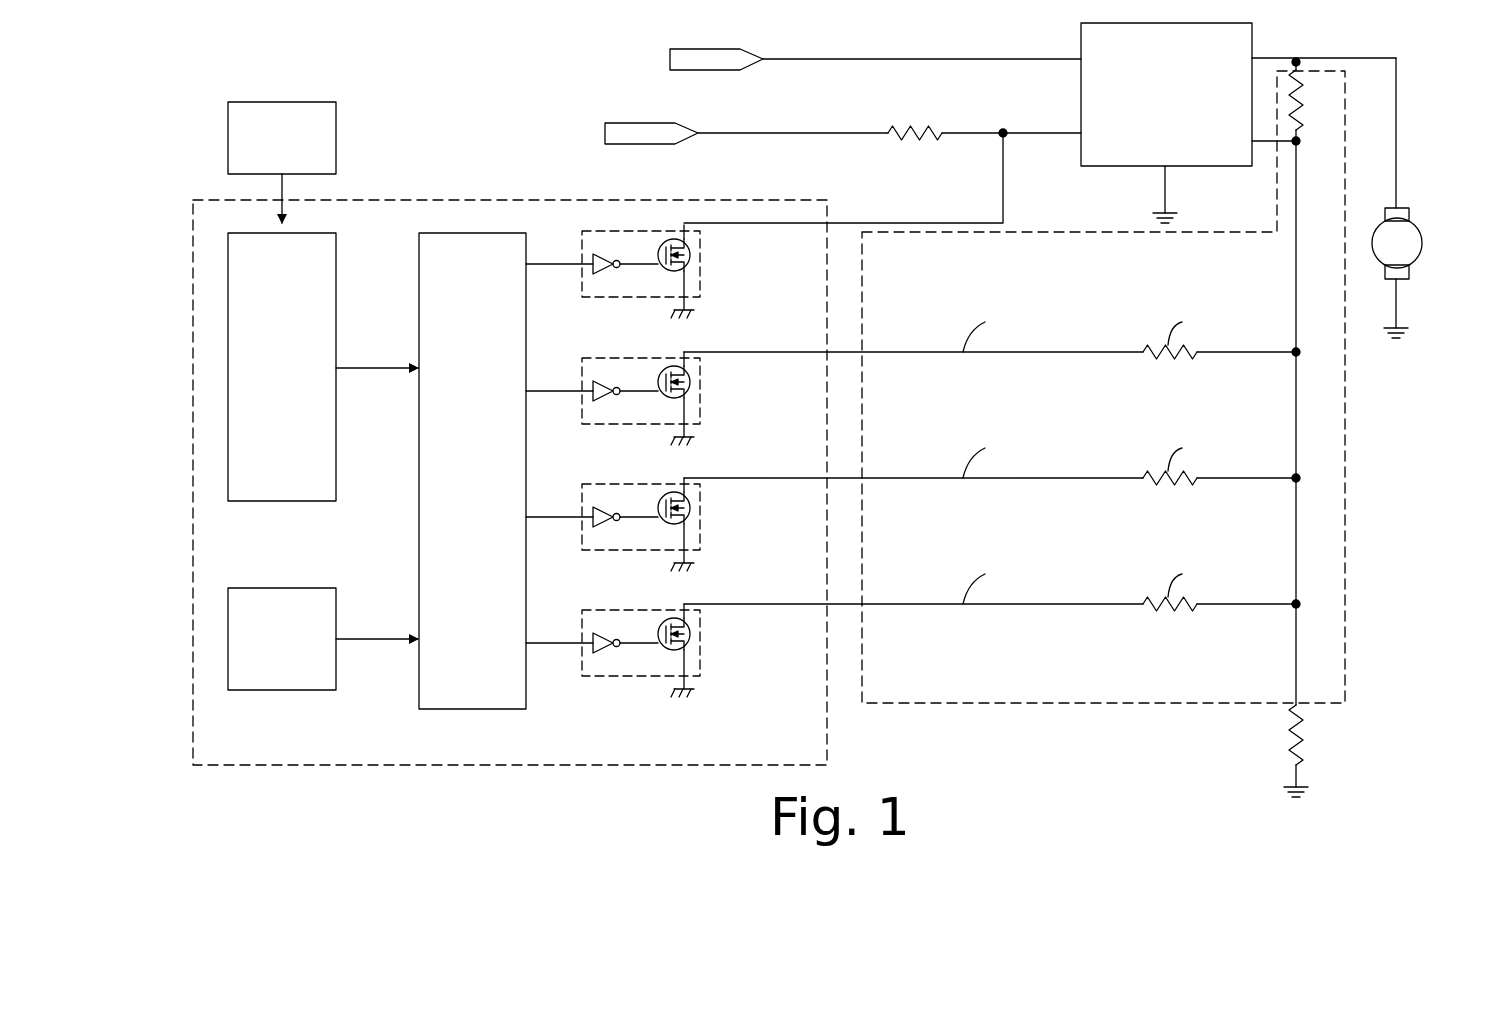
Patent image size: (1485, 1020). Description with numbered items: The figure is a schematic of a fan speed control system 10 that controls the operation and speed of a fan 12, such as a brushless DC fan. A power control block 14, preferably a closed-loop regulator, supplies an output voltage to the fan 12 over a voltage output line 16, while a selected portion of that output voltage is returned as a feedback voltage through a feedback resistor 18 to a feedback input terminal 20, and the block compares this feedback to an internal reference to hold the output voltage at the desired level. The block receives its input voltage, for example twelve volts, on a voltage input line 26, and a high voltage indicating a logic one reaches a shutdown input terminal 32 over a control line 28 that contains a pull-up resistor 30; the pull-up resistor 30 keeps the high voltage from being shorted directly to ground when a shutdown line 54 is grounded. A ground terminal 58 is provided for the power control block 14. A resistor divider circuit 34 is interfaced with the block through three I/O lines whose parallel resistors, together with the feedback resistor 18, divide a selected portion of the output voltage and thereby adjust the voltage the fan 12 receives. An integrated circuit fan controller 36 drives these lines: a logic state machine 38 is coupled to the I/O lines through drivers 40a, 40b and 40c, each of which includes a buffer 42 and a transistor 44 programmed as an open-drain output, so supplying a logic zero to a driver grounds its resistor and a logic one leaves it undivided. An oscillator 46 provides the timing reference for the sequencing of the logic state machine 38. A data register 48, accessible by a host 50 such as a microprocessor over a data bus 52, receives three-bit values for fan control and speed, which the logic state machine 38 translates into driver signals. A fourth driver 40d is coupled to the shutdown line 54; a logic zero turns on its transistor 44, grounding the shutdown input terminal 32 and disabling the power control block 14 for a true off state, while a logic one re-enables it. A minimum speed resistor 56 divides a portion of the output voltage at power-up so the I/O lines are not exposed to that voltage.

The fan speed control system 10 is at (322, 70).
The fan 12 is at (1410, 258).
The power control block 14 is at (1095, 23).
The voltage output line 16 is at (1265, 60).
The feedback resistor RFB 18 is at (1297, 128).
The feedback input terminal 20 is at (1250, 143).
The voltage input line 26 is at (935, 59).
The control line 28 is at (783, 133).
The pull-up resistor 30 is at (918, 142).
The shutdown (SHDN) input terminal 32 is at (1081, 133).
The resistor divider circuit 34 is at (1040, 705).
The integrated circuit fan controller 36 is at (270, 766).
The logic state machine 38 is at (419, 505).
The driver 40a is at (634, 610).
The driver 40b is at (634, 484).
The driver 40c is at (634, 358).
The driver 40d is at (634, 231).
The buffer 42 is at (593, 264).
The transistor 44 is at (690, 255).
The oscillator 46 is at (228, 650).
The data register 48 is at (228, 390).
The host 50 is at (250, 102).
The data bus 52 is at (284, 207).
The shutdown line 54 is at (1003, 190).
The Rmin_speed resistor 56 is at (1290, 745).
The ground terminal 58 is at (1165, 172).